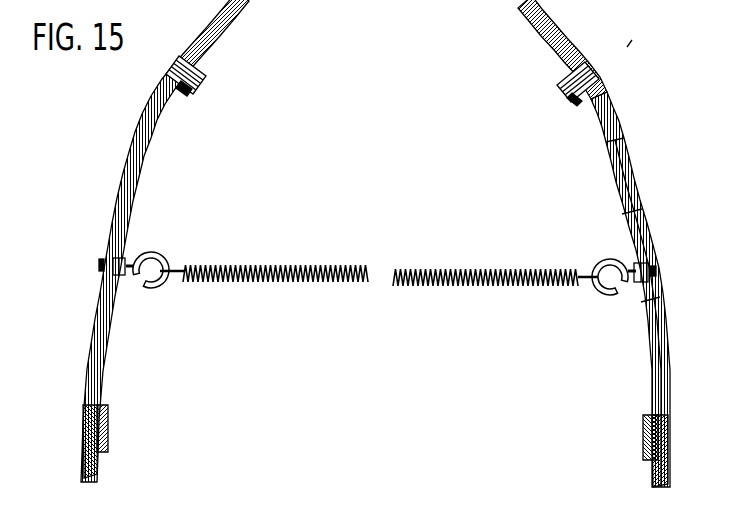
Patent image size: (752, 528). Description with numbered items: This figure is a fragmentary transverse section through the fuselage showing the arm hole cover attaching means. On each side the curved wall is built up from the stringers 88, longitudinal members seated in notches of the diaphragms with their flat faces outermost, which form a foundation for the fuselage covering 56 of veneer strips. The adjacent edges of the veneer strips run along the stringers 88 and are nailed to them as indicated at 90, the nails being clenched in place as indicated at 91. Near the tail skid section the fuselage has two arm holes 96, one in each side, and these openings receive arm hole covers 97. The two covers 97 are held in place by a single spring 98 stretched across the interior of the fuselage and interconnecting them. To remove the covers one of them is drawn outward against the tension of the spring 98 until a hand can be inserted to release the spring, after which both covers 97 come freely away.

The fuselage covering 56 is at (84, 447).
The stringers 88 is at (203, 67).
The nails 90 is at (183, 62).
The clenching 91 is at (191, 86).
The arm holes 96 is at (150, 124).
The arm hole covers 97 is at (107, 231).
The spring 98 is at (347, 263).